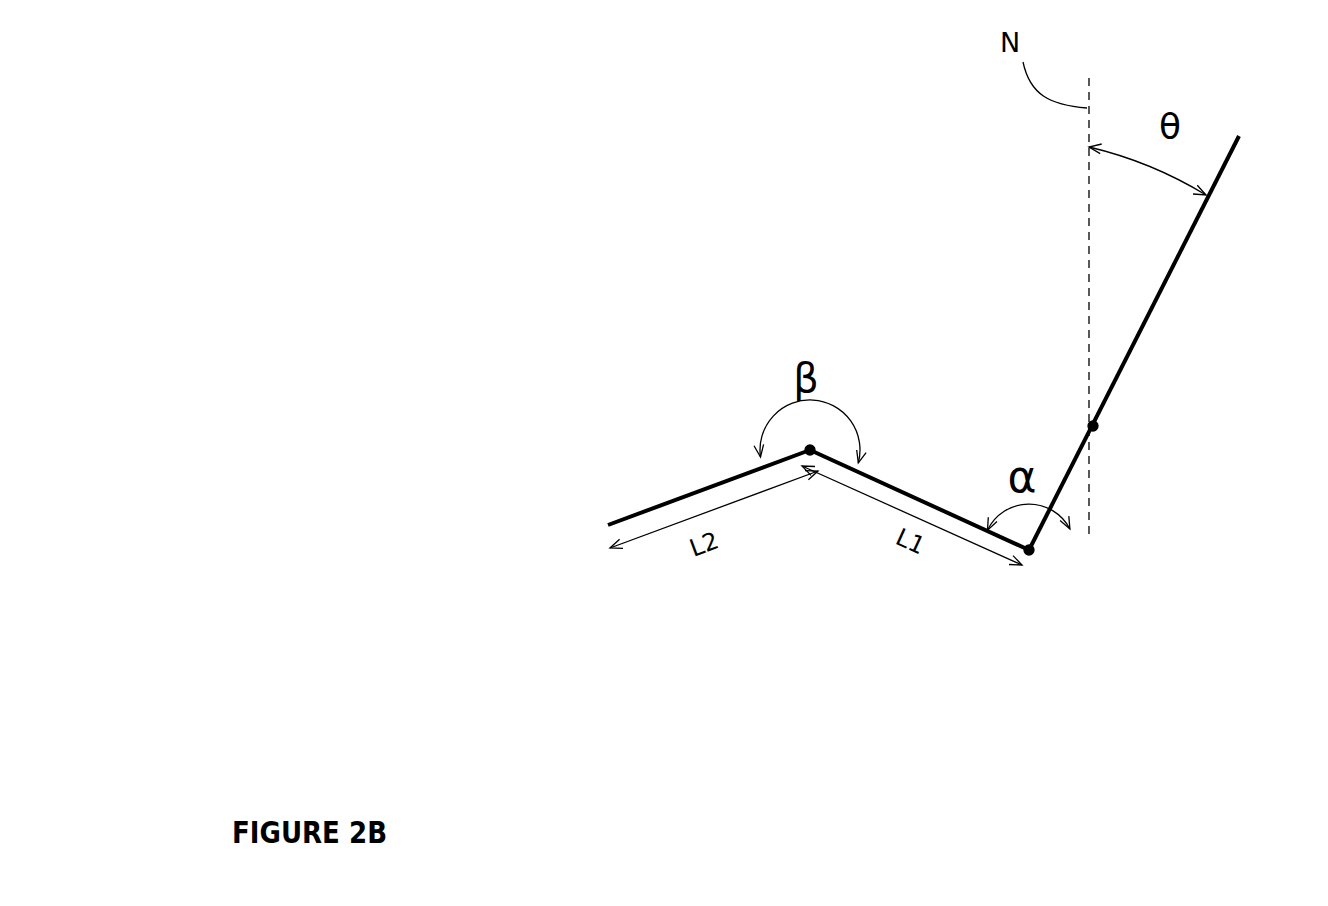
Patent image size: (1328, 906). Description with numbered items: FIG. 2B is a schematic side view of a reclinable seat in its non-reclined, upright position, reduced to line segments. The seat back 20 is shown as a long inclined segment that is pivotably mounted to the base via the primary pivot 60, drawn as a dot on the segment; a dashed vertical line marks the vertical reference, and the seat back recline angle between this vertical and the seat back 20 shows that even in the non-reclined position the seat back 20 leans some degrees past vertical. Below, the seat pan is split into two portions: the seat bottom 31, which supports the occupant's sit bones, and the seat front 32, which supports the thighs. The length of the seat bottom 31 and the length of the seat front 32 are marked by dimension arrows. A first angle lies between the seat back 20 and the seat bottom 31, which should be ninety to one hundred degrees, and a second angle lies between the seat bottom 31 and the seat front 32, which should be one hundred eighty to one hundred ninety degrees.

The seat back 20 is at (1200, 205).
The seat bottom 31 is at (893, 482).
The seat front 32 is at (667, 498).
The primary pivot 60 is at (1102, 435).